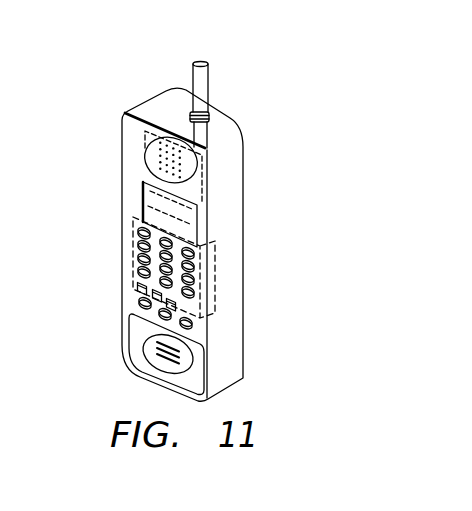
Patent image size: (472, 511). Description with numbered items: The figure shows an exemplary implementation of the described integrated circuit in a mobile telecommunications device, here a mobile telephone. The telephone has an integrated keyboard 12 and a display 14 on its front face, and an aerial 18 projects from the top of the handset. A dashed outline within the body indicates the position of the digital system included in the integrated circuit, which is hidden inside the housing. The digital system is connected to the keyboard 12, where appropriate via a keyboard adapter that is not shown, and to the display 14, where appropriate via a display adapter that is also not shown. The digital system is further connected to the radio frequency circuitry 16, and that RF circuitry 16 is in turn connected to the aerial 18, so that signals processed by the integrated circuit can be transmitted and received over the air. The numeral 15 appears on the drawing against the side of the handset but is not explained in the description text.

The integrated keyboard 12 is at (141, 255).
The display 14 is at (158, 201).
The housing 15 is at (235, 337).
The radio frequency (RF) circuitry 16 is at (147, 171).
The aerial 18 is at (203, 87).